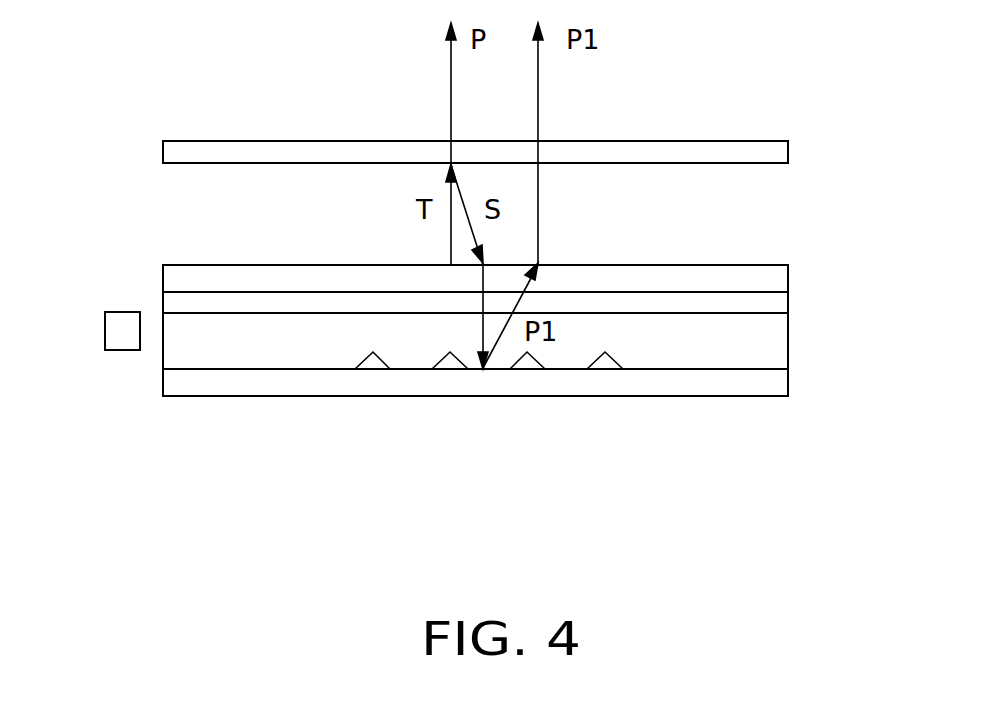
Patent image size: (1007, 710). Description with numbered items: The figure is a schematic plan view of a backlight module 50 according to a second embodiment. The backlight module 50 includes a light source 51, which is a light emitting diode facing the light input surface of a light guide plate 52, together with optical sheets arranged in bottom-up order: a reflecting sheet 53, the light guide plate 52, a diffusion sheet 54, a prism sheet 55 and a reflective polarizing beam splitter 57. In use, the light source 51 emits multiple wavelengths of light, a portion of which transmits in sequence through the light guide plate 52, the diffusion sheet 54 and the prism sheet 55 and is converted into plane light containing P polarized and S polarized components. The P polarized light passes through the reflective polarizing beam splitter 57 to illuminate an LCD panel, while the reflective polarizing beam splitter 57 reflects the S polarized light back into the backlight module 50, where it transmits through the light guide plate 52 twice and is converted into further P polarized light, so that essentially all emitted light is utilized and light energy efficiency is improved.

The backlight module 50 is at (371, 38).
The light source 51 is at (123, 337).
The light guide plate 52 is at (760, 343).
The reflecting sheet 53 is at (770, 382).
The diffusion sheet 54 is at (772, 303).
The prism sheet 55 is at (775, 276).
The reflective polarizing beam splitter 57 is at (775, 152).